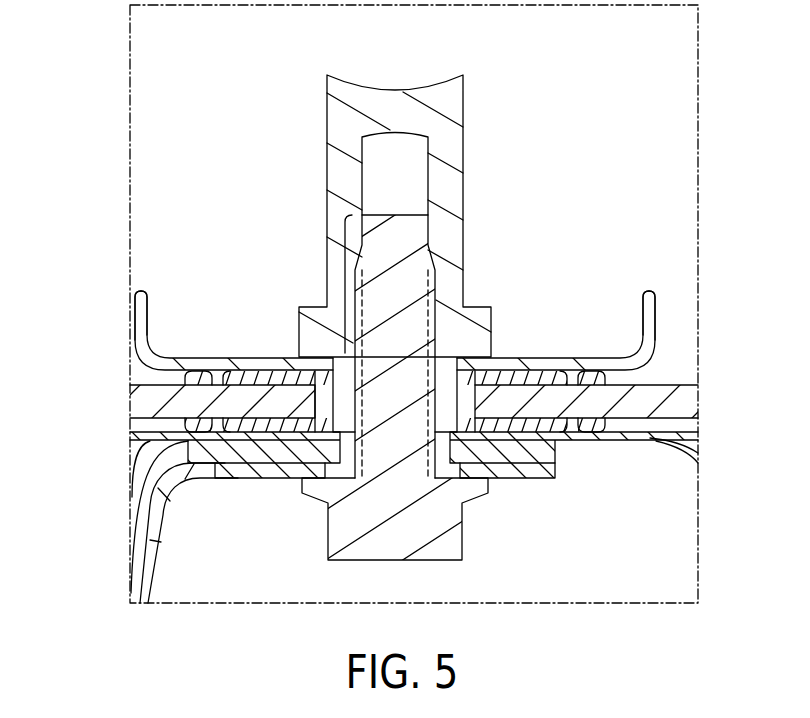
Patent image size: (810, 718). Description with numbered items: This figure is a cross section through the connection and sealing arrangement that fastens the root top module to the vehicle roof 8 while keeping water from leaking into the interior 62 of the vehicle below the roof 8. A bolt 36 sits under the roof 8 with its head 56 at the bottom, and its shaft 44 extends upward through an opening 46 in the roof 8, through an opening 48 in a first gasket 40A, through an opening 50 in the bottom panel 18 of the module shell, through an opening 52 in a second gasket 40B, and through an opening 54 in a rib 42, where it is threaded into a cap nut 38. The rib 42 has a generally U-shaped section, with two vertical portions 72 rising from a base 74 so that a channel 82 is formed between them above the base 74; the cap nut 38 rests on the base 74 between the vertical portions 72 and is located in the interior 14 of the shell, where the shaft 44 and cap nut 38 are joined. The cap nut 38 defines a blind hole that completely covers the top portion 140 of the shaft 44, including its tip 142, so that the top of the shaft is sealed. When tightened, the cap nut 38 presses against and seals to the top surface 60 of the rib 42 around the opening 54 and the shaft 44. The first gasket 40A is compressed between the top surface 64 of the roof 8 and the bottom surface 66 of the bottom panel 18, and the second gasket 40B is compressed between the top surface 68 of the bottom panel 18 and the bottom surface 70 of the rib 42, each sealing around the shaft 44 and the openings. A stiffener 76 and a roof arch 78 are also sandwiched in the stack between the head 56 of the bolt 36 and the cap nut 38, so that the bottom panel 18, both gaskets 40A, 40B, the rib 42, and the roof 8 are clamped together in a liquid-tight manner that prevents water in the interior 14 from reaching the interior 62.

The interior 14 is at (601, 120).
The cap nut 38 is at (341, 128).
The tip 142 is at (408, 213).
The shaft 44 is at (415, 285).
The top portion 140 is at (345, 285).
The channel 82 is at (258, 302).
The top surface 60 is at (184, 355).
The rib 42 is at (140, 323).
The vertical portions 72 is at (140, 323).
The second gasket 40B is at (231, 378).
The bottom surface 70 is at (152, 373).
The bottom panel 18 is at (130, 403).
The roof 8 is at (140, 437).
The stiffener 76 is at (132, 520).
The roof arch 78 is at (140, 577).
The first gasket 40A is at (262, 432).
The opening 54 is at (447, 365).
The opening 50 is at (447, 393).
The opening 46 is at (435, 432).
The opening 52 is at (497, 380).
The base 74 is at (520, 368).
The top surface 68 is at (655, 372).
The top surface 64 is at (690, 432).
The bottom surface 66 is at (690, 455).
The opening 48 is at (498, 445).
The bolt 36 is at (458, 522).
The head 56 is at (432, 553).
The interior 62 is at (630, 585).